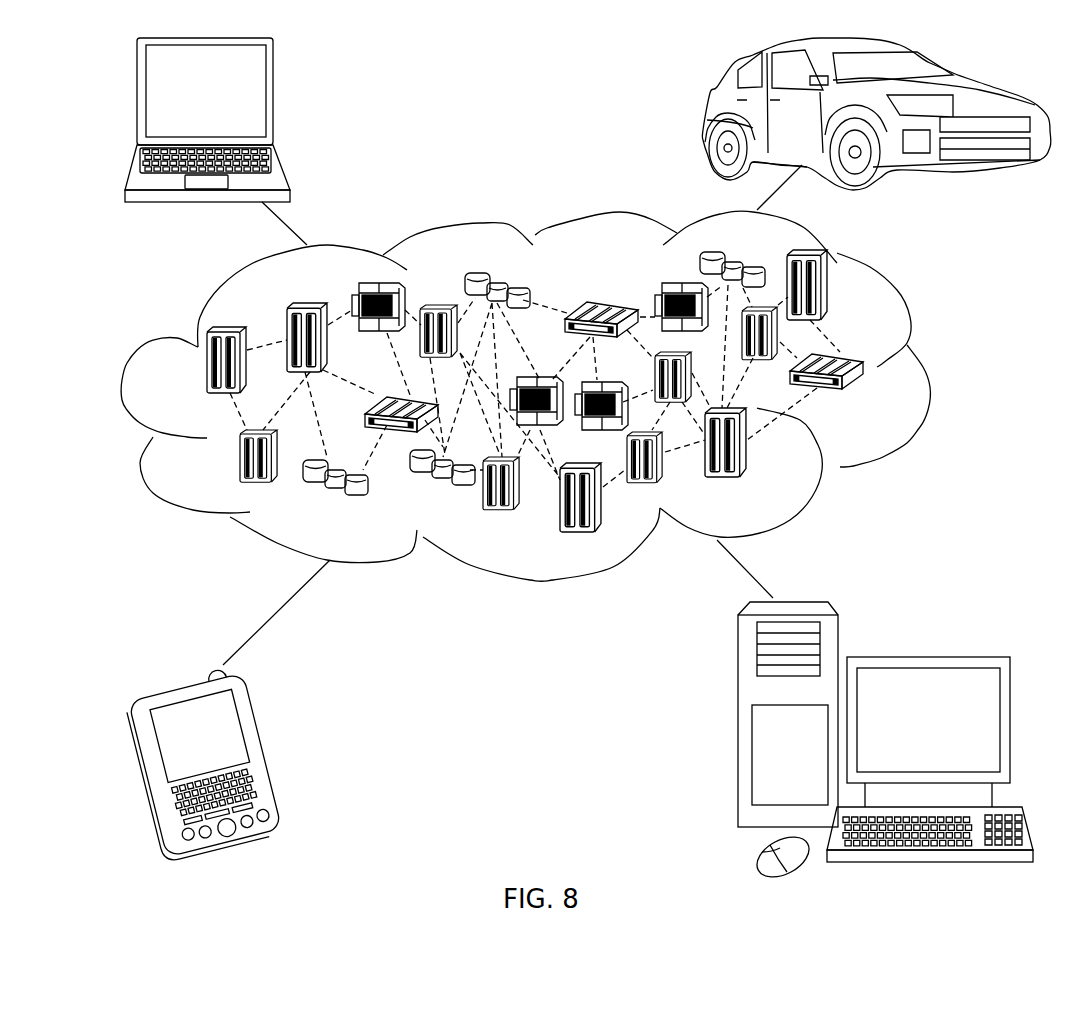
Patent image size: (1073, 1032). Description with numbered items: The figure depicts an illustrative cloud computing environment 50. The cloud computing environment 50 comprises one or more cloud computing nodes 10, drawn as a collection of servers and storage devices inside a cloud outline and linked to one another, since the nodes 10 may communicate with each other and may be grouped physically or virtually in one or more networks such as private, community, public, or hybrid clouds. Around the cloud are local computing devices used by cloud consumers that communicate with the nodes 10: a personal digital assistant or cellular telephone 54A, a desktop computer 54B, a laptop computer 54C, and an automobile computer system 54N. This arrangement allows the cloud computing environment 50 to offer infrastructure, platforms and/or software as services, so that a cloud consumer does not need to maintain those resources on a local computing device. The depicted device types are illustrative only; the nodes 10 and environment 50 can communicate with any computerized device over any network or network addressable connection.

The cloud computing node 10 is at (868, 398).
The cloud computing environment 50 is at (925, 372).
The personal digital assistant (PDA) or cellular telephone 54A is at (262, 749).
The desktop computer 54B is at (927, 656).
The laptop computer 54C is at (274, 99).
The automobile computer system 54N is at (709, 117).